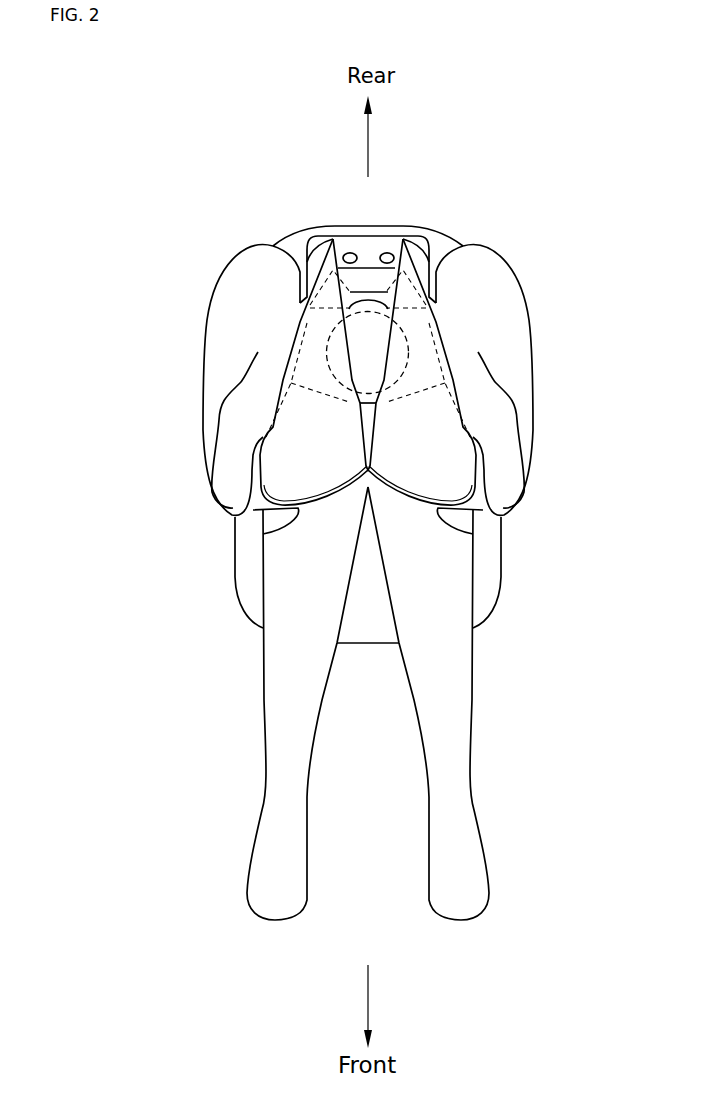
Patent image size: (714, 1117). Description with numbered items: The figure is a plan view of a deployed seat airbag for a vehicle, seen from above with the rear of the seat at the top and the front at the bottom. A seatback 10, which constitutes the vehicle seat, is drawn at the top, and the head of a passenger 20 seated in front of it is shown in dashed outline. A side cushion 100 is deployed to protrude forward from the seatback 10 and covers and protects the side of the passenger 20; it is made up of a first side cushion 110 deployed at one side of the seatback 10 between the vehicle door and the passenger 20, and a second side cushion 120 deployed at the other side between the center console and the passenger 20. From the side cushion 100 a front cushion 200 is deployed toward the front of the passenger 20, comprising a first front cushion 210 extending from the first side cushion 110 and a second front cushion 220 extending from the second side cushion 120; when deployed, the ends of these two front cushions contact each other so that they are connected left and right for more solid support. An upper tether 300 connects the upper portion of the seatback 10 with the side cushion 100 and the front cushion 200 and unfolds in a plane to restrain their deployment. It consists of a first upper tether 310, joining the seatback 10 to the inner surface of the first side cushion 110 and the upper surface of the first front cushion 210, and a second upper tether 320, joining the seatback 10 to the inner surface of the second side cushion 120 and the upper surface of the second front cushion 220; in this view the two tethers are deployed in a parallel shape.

The seatback 10 is at (400, 233).
The passenger 20 is at (370, 328).
The side cushion 100 is at (500, 320).
The first side cushion 110 is at (523, 355).
The second side cushion 120 is at (210, 370).
The front cushion 200 is at (321, 501).
The first front cushion 210 is at (473, 533).
The second front cushion 220 is at (263, 534).
The upper tether 300 is at (445, 449).
The first upper tether 310 is at (440, 412).
The second upper tether 320 is at (310, 453).